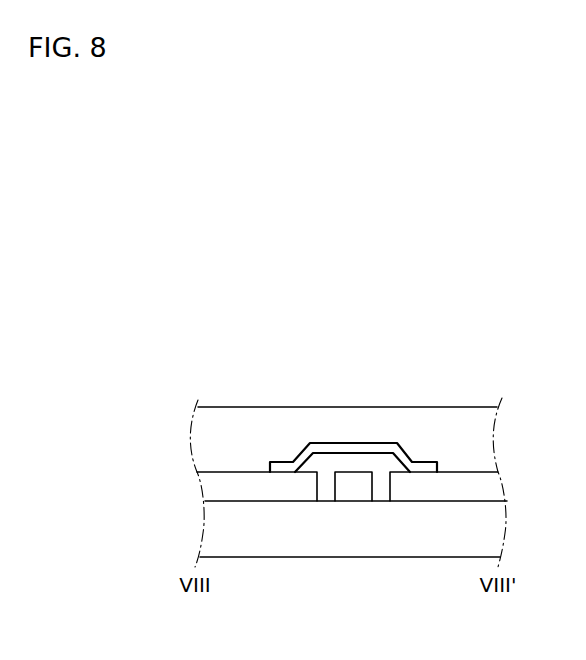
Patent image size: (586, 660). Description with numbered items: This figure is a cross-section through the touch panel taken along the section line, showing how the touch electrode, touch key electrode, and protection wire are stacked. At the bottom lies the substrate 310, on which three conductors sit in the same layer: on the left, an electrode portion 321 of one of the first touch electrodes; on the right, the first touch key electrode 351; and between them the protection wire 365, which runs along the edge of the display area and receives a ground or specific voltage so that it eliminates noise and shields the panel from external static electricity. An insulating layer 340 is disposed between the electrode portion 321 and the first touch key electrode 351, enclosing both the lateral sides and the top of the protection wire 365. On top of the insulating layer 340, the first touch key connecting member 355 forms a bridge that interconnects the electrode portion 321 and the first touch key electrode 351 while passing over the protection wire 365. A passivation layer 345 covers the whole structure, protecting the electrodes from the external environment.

The substrate 310 is at (257, 535).
The electrode portion 321 is at (258, 480).
The insulating layer 340 is at (383, 465).
The passivation layer 345 is at (220, 423).
The first touch key electrode 351 is at (472, 483).
The first touch key connecting member 355 is at (319, 445).
The protection wire 365 is at (353, 497).